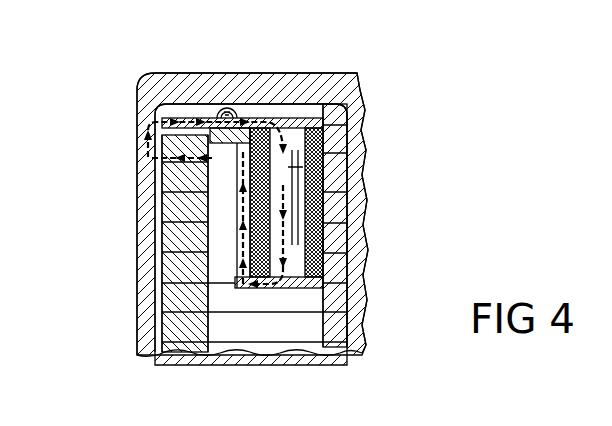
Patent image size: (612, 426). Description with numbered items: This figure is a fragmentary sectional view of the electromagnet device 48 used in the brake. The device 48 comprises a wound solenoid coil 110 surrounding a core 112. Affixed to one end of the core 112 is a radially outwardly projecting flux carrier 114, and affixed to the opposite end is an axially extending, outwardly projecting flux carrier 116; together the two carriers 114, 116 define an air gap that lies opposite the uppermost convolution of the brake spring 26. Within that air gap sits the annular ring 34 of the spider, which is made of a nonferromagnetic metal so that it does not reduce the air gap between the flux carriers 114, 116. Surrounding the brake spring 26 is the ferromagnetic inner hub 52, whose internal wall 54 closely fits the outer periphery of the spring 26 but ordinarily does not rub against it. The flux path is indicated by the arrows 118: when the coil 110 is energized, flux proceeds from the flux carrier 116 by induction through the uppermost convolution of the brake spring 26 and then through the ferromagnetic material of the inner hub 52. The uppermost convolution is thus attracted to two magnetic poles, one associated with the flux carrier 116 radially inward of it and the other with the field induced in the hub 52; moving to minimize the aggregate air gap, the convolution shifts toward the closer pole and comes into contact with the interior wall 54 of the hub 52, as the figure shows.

The brake spring 26 is at (182, 298).
The annular ring 34 is at (250, 123).
The electromagnet device 48 is at (300, 290).
The inner hub 52 is at (137, 105).
The internal wall 54 is at (153, 343).
The solenoid coil 110 is at (283, 208).
The core 112 is at (300, 165).
The flux carrier 114 is at (192, 123).
The flux carrier 116 is at (240, 197).
The arrows 118 is at (137, 158).